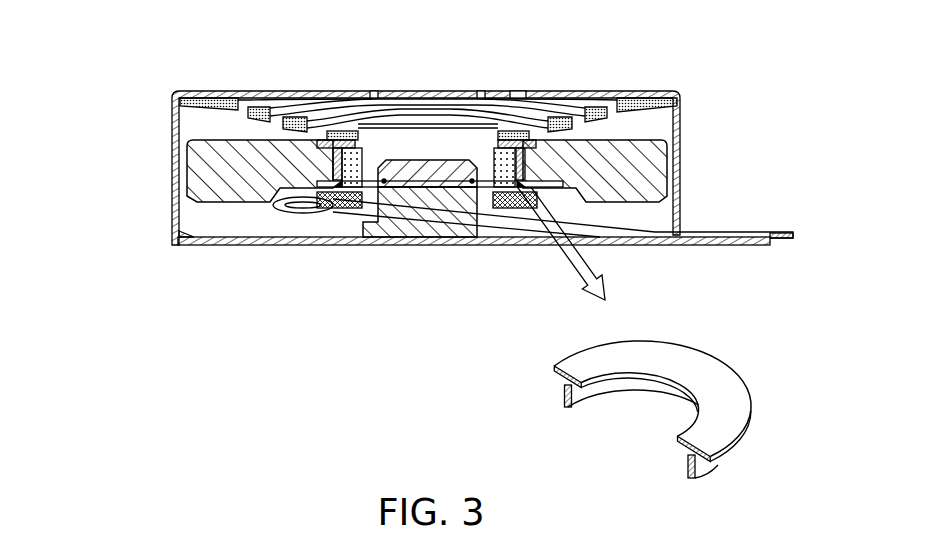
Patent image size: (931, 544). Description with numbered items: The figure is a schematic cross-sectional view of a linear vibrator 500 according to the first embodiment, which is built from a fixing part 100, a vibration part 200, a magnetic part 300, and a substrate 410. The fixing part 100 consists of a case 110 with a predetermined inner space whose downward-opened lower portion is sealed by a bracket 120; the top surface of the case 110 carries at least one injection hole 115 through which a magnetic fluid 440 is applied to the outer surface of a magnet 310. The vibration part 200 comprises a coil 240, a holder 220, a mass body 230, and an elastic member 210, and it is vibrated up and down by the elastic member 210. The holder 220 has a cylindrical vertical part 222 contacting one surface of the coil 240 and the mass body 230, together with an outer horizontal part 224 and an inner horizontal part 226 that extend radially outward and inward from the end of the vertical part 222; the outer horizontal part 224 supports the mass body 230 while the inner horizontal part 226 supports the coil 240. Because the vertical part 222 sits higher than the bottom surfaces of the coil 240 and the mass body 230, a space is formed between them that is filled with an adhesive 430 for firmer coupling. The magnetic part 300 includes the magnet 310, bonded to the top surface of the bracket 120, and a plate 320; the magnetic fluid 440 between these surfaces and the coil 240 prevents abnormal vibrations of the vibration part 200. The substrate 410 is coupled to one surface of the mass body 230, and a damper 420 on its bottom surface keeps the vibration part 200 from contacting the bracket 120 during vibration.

The linear vibrator 500 is at (254, 47).
The injection hole 115 is at (518, 92).
The fixing part 100 is at (82, 193).
The case 110 is at (172, 208).
The bracket 120 is at (178, 246).
The vibration part 200 is at (748, 101).
The elastic member 210 is at (660, 119).
The holder 220 is at (529, 163).
The vertical part 222 is at (563, 398).
The outer horizontal part 224 is at (553, 370).
The inner horizontal part 226 is at (588, 375).
The mass body 230 is at (642, 199).
The coil 240 is at (538, 142).
The magnetic part 300 is at (377, 293).
The magnet 310 is at (406, 185).
The plate 320 is at (375, 228).
The substrate 410 is at (280, 208).
The damper 420 is at (508, 190).
The adhesive 430 is at (330, 209).
The magnetic fluid 440 is at (502, 209).